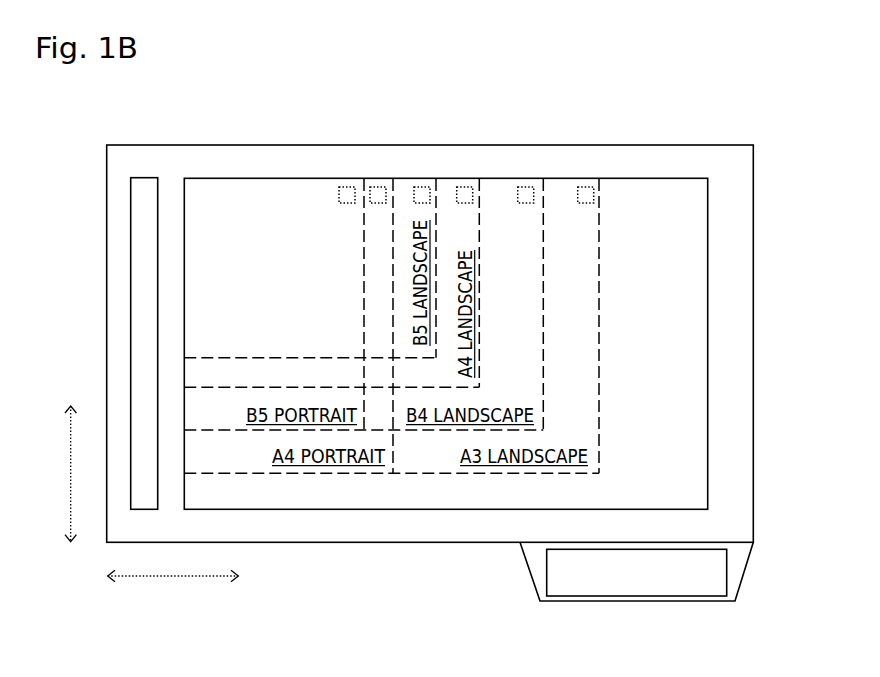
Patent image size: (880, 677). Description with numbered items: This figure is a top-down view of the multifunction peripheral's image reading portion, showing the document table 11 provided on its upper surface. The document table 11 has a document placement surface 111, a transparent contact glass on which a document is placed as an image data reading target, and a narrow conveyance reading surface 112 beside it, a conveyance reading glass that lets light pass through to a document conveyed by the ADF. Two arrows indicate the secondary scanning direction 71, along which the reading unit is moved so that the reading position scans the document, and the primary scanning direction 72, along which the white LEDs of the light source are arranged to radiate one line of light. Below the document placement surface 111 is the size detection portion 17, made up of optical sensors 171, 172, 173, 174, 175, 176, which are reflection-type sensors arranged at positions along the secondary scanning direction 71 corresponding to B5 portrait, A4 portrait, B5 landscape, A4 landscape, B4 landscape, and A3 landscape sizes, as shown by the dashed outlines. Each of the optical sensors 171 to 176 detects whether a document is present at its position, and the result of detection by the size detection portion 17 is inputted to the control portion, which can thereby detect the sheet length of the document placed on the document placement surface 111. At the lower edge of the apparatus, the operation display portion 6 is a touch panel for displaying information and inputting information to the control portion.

The document table 11 is at (206, 145).
The document placement surface 111 is at (678, 178).
The conveyance reading surface 112 is at (143, 177).
The size detection portion 17 is at (422, 154).
The optical sensor 171 is at (345, 186).
The optical sensor 172 is at (380, 186).
The optical sensor 173 is at (422, 186).
The optical sensor 174 is at (466, 186).
The optical sensor 175 is at (528, 186).
The optical sensor 176 is at (588, 186).
The operation display portion 6 is at (727, 572).
The secondary scanning direction 71 is at (172, 578).
The primary scanning direction 72 is at (70, 464).